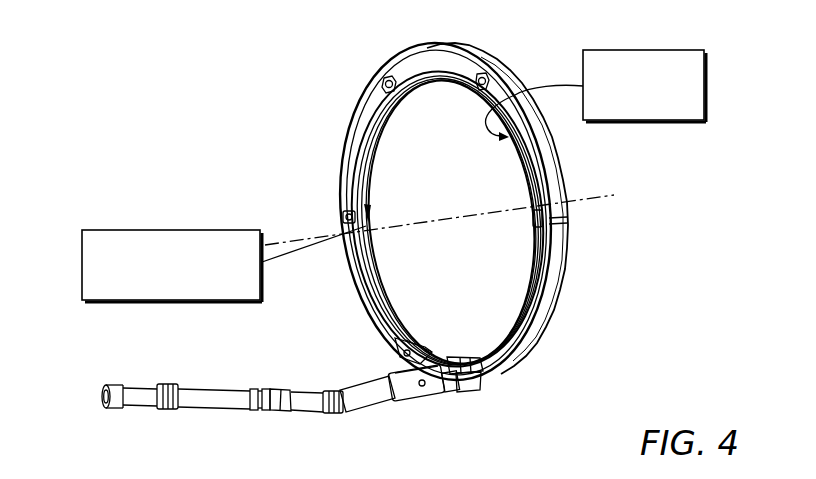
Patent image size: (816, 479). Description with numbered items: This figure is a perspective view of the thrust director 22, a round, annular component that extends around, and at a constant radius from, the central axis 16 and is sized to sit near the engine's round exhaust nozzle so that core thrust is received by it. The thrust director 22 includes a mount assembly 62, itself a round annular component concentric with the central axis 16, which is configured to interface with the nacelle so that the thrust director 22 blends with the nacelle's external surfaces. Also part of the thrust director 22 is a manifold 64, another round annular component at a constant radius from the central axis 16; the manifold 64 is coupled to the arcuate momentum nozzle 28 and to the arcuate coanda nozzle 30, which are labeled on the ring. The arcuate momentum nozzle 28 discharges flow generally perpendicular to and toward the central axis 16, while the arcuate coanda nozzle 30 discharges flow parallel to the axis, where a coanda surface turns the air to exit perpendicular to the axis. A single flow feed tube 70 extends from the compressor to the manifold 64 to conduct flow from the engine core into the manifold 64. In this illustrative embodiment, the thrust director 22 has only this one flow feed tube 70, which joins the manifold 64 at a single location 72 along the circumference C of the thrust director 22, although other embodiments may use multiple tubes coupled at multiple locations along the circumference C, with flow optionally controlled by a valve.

The thrust director 22 is at (276, 113).
The mount assembly 62 is at (360, 99).
The manifold 64 is at (481, 345).
The single location 72 is at (462, 394).
The flow feed tube 70 is at (290, 378).
The central axis 16 is at (577, 192).
The arcuate momentum nozzle 28 is at (126, 230).
The arcuate coanda nozzle 30 is at (661, 50).
The circumference C is at (478, 400).